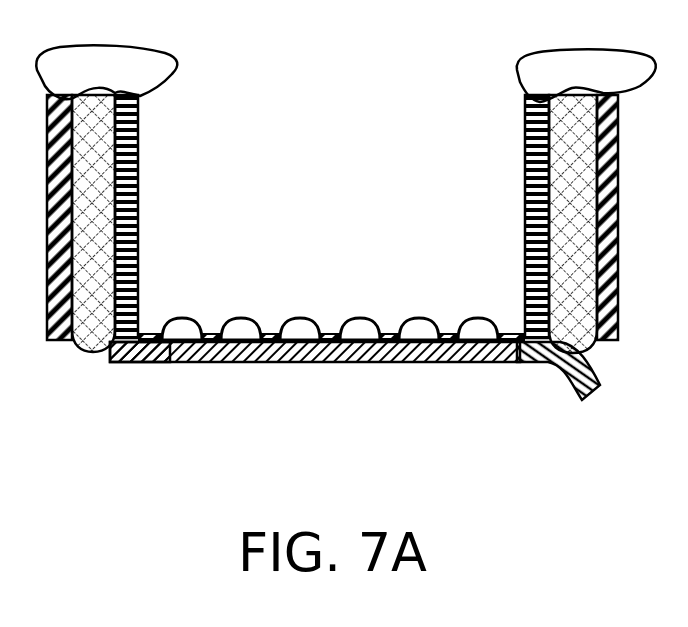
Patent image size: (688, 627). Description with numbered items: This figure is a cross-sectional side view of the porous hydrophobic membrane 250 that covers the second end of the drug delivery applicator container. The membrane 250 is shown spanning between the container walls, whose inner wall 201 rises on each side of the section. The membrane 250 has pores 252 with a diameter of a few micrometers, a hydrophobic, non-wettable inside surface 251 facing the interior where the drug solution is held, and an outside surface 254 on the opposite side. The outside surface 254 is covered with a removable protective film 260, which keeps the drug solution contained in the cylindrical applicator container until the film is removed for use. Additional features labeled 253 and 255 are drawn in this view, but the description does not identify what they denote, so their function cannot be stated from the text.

The inner wall 201 is at (143, 100).
The porous membrane 250 is at (450, 332).
The inside surface 251 is at (152, 338).
The pores 252 is at (305, 330).
The left edge portion of base 253 is at (160, 362).
The outside surface 254 is at (516, 362).
The sidewall layer 255 is at (142, 338).
The removable protective film 260 is at (326, 362).